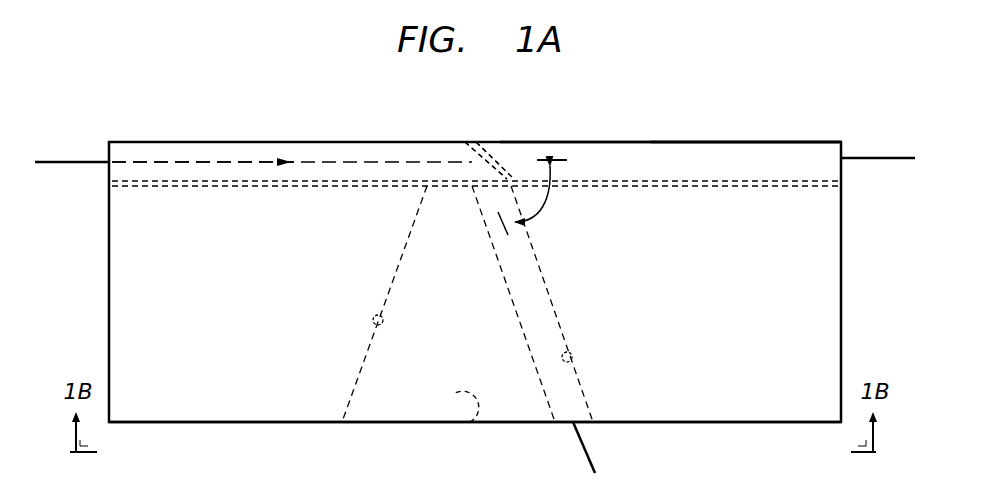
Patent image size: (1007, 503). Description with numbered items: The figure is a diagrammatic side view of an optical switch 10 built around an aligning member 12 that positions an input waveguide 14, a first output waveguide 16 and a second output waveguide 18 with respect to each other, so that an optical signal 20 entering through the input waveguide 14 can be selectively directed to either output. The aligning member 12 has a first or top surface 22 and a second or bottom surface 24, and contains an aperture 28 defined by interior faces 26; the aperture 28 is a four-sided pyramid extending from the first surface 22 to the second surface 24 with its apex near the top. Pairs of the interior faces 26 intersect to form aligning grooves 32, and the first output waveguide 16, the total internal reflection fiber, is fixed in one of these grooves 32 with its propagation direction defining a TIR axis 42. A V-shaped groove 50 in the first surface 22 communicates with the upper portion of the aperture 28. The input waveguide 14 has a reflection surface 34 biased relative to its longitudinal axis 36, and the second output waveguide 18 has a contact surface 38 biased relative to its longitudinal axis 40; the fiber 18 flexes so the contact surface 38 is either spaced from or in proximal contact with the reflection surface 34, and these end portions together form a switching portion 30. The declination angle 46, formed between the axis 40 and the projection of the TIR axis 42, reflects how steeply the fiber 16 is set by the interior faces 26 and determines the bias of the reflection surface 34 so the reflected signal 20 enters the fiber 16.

The optical switch 10 is at (475, 240).
The aligning member 12 is at (215, 378).
The input waveguide 14 is at (260, 148).
The first output waveguide 16 is at (548, 321).
The second output waveguide 18 is at (637, 148).
The optical signal 20 is at (332, 160).
The first surface 22 is at (758, 141).
The second surface 24 is at (237, 423).
The interior faces 26 is at (470, 422).
The aperture 28 is at (372, 352).
The switching portion 30 is at (462, 140).
The aligning grooves 32 is at (372, 320).
The reflection surface 34 is at (473, 155).
The longitudinal axis 36 is at (72, 160).
The contact surface 38 is at (500, 168).
The longitudinal axis 40 is at (878, 157).
The TIR axis 42 is at (587, 447).
The declination angle 46 is at (540, 205).
The V-shaped groove 50 is at (821, 185).